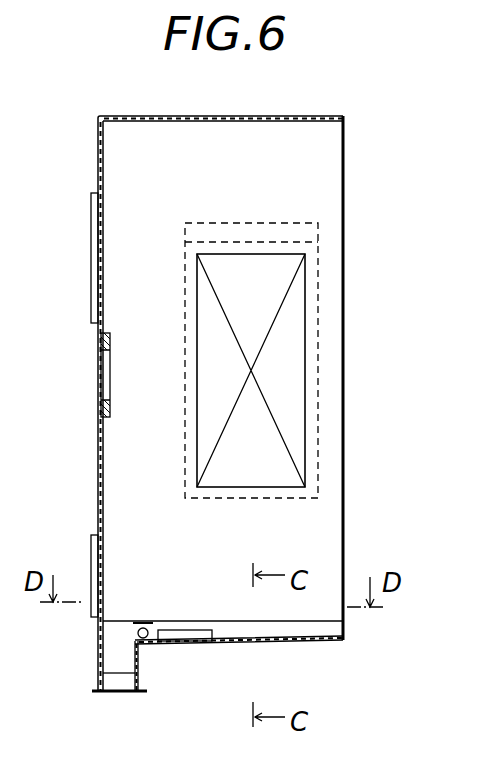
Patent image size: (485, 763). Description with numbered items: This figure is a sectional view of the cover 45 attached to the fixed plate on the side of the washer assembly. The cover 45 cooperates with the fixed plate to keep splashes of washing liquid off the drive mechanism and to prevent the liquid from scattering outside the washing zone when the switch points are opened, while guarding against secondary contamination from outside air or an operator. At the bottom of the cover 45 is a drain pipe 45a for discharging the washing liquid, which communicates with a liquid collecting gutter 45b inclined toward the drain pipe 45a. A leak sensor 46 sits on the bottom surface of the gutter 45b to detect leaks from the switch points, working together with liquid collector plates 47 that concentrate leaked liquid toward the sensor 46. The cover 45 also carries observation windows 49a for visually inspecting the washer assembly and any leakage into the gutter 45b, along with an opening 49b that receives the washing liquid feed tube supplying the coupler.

The cover 45 is at (323, 161).
The drain pipe 45a is at (108, 667).
The liquid collecting gutter 45b is at (285, 642).
The leak sensor 46 is at (147, 645).
The liquid collector plate 47 is at (196, 642).
The observation window 49a is at (290, 358).
The opening 49b is at (100, 370).